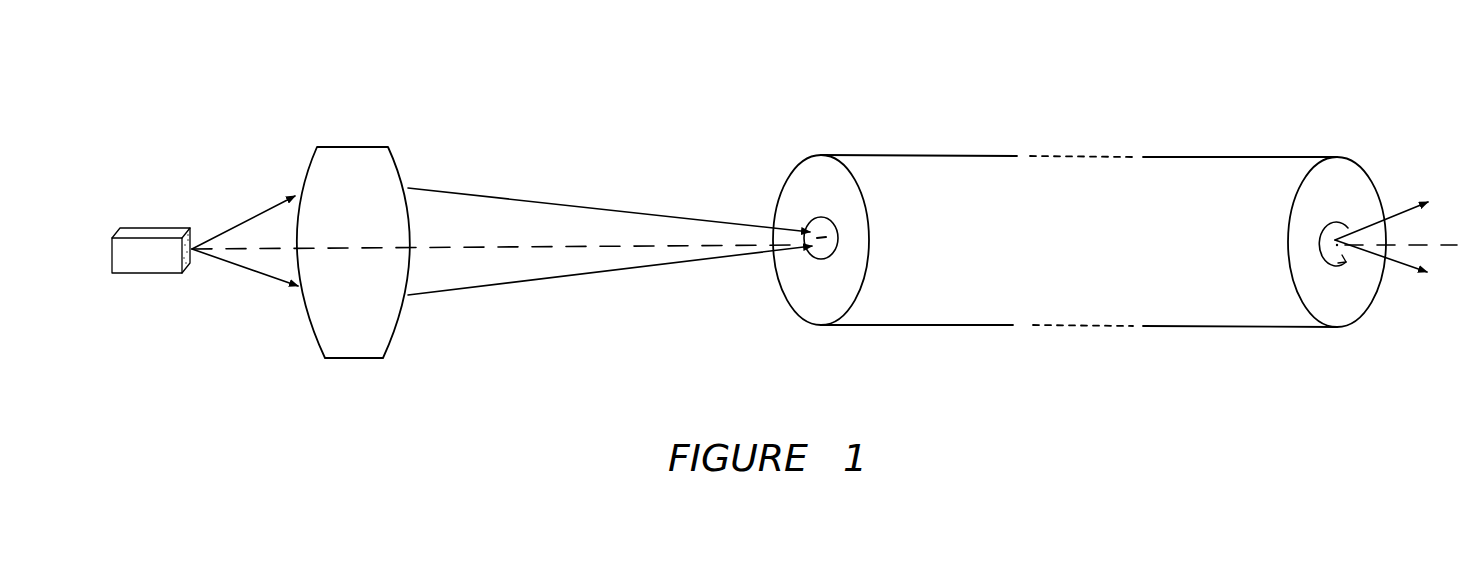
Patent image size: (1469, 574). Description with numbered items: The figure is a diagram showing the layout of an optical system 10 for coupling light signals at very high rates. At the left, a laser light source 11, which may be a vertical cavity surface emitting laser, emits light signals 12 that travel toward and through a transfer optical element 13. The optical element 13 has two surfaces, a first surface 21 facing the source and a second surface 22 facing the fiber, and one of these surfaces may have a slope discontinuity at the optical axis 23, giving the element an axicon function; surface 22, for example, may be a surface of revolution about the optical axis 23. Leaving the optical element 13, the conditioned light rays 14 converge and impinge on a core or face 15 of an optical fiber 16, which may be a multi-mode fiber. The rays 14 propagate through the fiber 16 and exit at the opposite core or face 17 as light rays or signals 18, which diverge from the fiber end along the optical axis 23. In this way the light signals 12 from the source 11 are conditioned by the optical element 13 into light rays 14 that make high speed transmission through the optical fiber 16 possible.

The optical system 10 is at (872, 91).
The laser light source 11 is at (158, 228).
The light signals 12 is at (244, 216).
The transfer optical element 13 is at (378, 147).
The light rays 14 is at (560, 201).
The core or face 15 is at (815, 217).
The optical fiber 16 is at (955, 157).
The core or face 17 is at (1330, 222).
The light rays or signals 18 is at (1394, 214).
The surface 21 is at (302, 298).
The surface 22 is at (403, 308).
The optical axis 23 is at (462, 246).